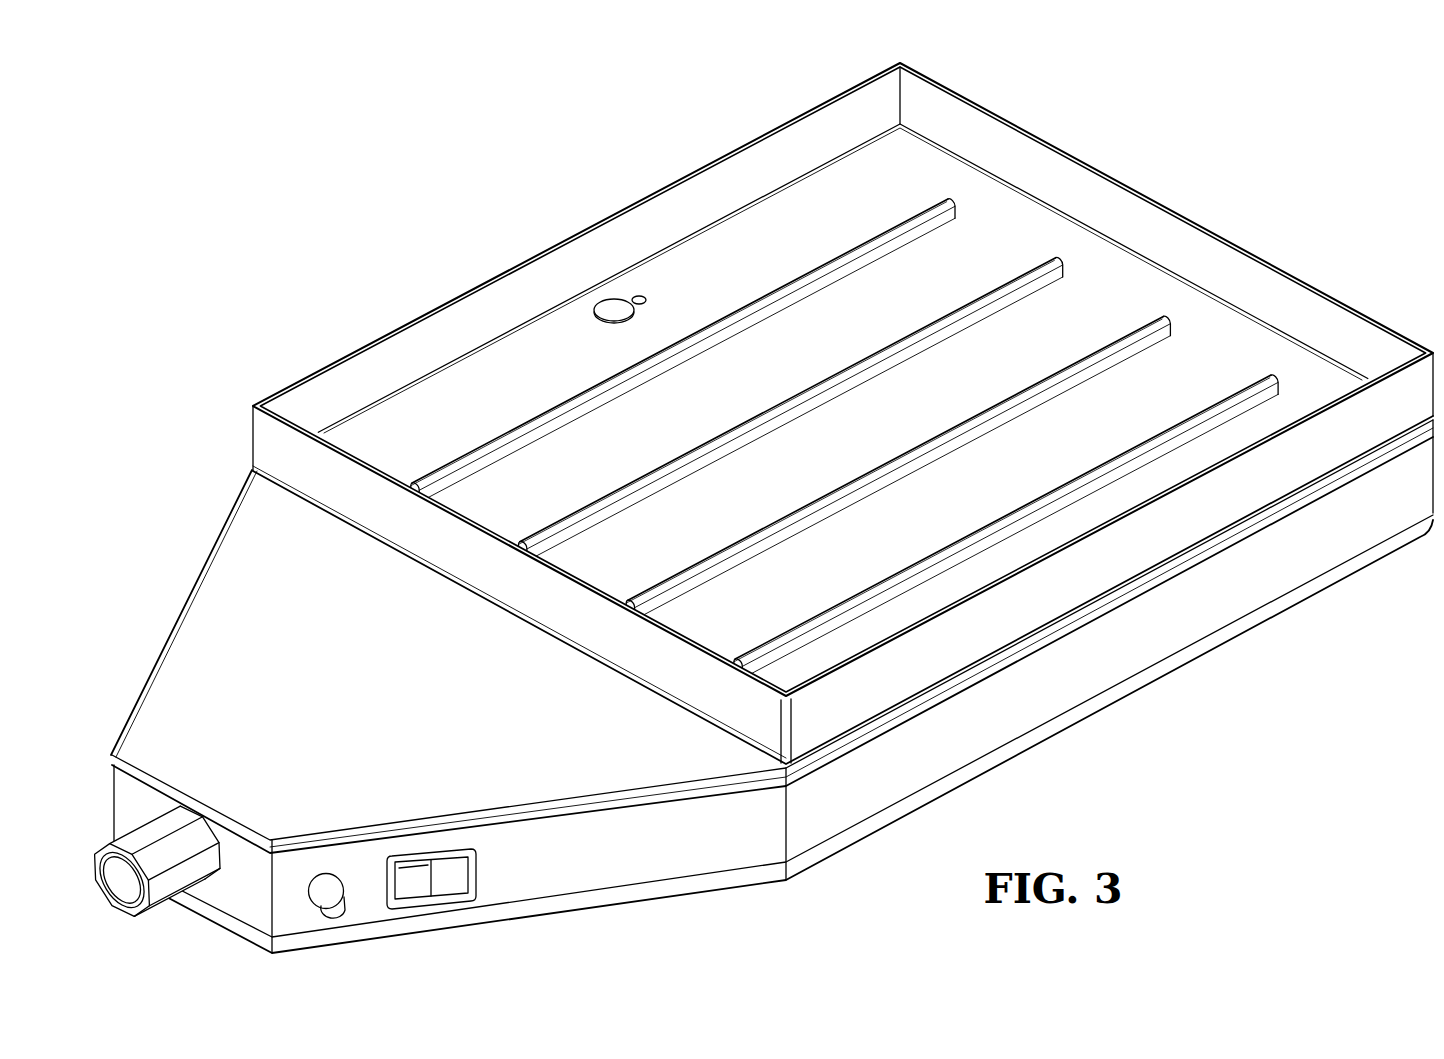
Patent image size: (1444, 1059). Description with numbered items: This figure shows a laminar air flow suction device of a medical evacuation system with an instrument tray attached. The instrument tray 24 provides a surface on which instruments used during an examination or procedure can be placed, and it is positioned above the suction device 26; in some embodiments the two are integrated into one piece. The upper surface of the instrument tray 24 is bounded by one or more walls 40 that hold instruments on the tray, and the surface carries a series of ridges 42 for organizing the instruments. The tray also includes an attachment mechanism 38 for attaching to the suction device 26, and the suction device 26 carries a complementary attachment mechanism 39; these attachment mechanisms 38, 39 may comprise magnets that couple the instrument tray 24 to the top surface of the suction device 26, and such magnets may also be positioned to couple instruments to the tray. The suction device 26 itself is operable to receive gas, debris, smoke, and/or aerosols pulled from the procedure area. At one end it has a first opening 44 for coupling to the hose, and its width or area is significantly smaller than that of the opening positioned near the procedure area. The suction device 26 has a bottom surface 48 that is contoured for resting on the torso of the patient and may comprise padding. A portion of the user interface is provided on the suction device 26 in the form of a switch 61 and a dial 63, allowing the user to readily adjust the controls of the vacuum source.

The instrument tray 24 is at (1152, 196).
The suction device 26 is at (1227, 603).
The attachment mechanism 38 is at (598, 325).
The attachment mechanism 39 is at (646, 299).
The wall 40 is at (712, 160).
The ridge 42 is at (958, 316).
The first opening 44 is at (117, 890).
The bottom surface 48 is at (1147, 685).
The switch 61 is at (470, 878).
The dial 63 is at (346, 893).